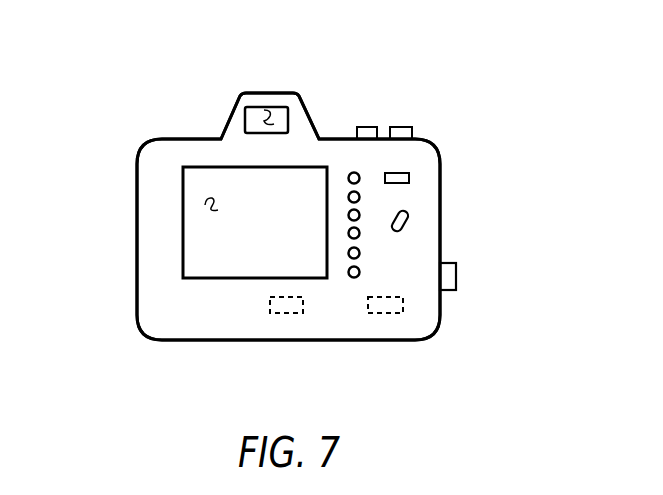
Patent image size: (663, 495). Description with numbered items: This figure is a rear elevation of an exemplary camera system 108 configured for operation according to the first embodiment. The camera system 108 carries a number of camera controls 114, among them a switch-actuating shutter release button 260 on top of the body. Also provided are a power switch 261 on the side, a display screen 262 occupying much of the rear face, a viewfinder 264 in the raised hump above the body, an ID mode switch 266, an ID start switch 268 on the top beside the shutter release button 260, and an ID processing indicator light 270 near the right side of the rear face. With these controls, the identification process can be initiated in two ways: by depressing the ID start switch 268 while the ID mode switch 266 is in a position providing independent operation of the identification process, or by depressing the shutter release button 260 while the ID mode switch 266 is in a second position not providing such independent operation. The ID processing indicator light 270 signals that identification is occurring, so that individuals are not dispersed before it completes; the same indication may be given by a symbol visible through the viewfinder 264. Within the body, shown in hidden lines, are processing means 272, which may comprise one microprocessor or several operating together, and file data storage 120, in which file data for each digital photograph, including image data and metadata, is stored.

The camera system 108 is at (143, 352).
The camera controls 114 is at (303, 362).
The file data storage 120 is at (388, 313).
The shutter release button 260 is at (402, 126).
The power switch 261 is at (456, 273).
The display screen 262 is at (205, 205).
The viewfinder 264 is at (268, 122).
The ID mode switch 266 is at (408, 223).
The ID start switch 268 is at (370, 127).
The ID processing indicator light 270 is at (410, 178).
The processing means 272 is at (287, 313).